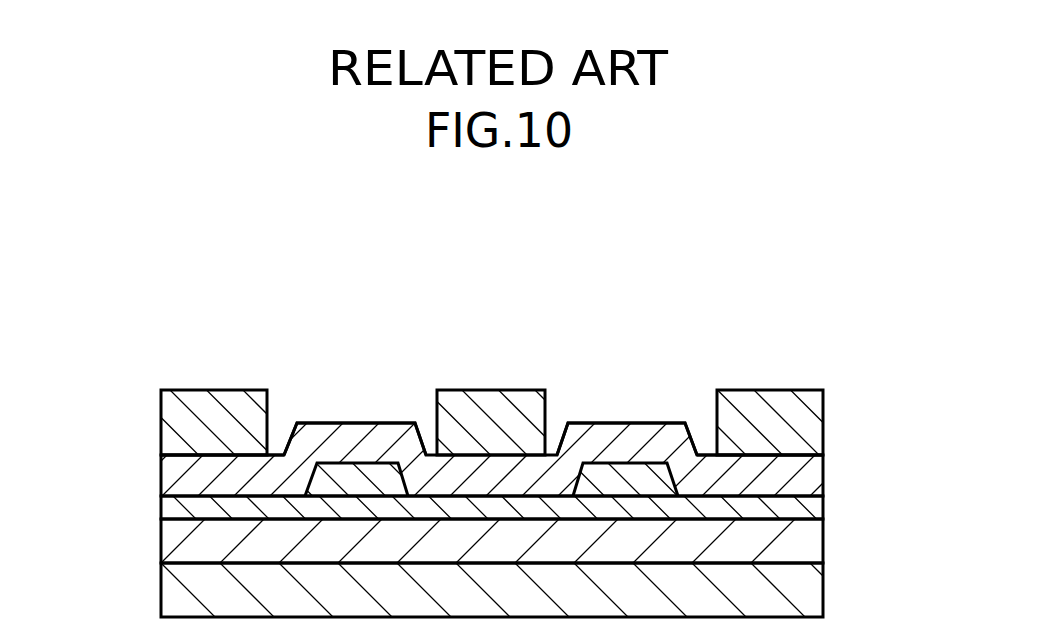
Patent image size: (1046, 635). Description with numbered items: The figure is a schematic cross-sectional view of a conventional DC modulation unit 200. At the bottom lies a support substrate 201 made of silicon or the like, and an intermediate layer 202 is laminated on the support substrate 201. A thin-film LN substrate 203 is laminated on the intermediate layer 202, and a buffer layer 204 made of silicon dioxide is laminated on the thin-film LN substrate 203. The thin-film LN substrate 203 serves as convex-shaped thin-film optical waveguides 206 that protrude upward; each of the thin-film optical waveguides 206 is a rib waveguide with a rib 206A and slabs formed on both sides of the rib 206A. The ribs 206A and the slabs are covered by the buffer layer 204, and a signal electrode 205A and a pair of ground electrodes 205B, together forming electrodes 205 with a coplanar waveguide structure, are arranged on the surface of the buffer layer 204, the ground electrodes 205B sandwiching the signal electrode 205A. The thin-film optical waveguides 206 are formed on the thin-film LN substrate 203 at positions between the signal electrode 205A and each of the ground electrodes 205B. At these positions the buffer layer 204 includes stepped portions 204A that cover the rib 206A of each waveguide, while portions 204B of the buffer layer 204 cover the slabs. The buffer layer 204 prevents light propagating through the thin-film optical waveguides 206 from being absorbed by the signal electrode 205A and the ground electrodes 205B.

The DC modulation unit 200 is at (790, 230).
The support substrate 201 is at (812, 588).
The intermediate layer 202 is at (812, 540).
The thin-film LN substrate 203 is at (812, 503).
The buffer layer 204 is at (465, 475).
The stepped portions 204A is at (357, 433).
The portions 204B is at (173, 468).
The electrodes 205 is at (536, 463).
The signal electrode 205A is at (490, 423).
The ground electrodes 205B is at (768, 423).
The thin-film optical waveguides 206 is at (536, 447).
The rib 206A is at (633, 490).